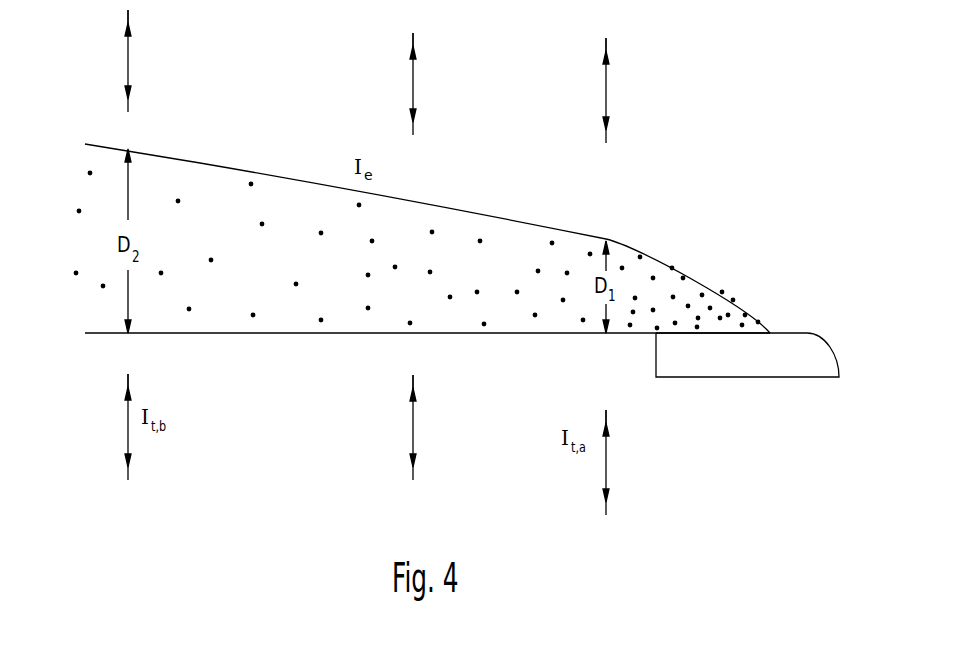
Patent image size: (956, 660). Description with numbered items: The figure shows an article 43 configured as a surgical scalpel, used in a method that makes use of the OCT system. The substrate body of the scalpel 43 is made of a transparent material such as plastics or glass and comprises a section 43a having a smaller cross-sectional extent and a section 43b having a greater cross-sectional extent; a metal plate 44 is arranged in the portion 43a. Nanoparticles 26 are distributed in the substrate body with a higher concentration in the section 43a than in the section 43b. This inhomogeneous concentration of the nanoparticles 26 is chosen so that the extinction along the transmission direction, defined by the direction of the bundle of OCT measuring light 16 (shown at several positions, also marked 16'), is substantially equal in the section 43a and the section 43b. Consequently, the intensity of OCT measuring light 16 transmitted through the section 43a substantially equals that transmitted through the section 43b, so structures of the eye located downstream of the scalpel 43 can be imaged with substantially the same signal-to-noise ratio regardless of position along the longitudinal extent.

The OCT measuring light 16 is at (393, 264).
The light source boundary 16' is at (397, 221).
The nanoparticles 26 is at (410, 320).
The article 43 is at (272, 152).
The section 43a is at (622, 210).
The section 43b is at (99, 122).
The metal plate 44 is at (731, 377).